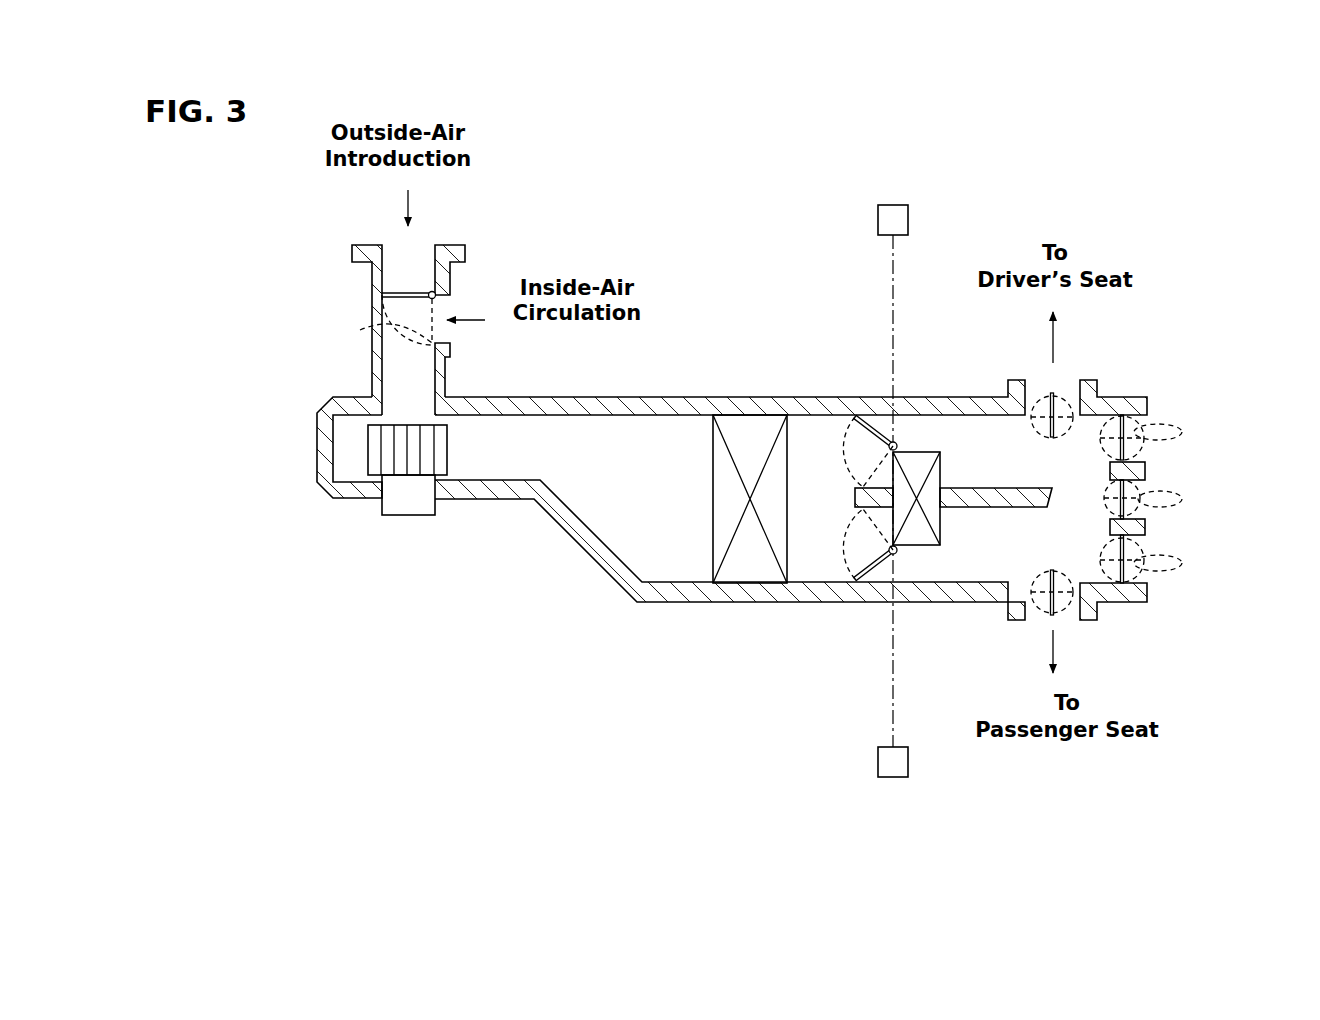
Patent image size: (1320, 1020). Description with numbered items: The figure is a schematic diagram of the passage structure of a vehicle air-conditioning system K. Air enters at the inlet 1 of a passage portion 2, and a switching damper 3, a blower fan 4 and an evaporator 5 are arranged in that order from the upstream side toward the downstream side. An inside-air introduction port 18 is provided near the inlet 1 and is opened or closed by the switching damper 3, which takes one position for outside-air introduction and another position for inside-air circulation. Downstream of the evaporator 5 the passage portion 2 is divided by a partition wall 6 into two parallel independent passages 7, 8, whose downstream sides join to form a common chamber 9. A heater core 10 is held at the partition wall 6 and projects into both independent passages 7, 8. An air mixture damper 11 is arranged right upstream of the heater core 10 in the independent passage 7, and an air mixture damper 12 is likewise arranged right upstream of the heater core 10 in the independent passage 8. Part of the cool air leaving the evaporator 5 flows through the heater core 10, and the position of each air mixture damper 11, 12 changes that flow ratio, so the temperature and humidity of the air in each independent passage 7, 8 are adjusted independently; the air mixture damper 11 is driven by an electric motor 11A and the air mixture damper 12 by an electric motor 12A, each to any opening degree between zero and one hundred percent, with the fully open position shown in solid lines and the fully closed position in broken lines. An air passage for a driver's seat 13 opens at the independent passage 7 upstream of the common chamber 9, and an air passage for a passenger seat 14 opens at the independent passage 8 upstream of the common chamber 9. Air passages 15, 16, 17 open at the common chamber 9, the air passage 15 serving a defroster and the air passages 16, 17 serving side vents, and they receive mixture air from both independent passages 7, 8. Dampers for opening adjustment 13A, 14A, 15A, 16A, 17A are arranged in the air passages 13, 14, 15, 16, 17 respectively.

The air-conditioning system K is at (704, 233).
The inlet 1 is at (397, 272).
The passage portion 2 is at (608, 518).
The switching damper 3 is at (402, 297).
The blower fan 4 is at (387, 458).
The evaporator 5 is at (748, 568).
The partition wall 6 is at (972, 502).
The independent passage 7 is at (964, 438).
The independent passage 8 is at (987, 558).
The common chamber 9 is at (1075, 492).
The heater core 10 is at (915, 462).
The air mixture damper 11 is at (885, 441).
The electric motor 11A is at (891, 212).
The air mixture damper 12 is at (876, 566).
The electric motor 12A is at (900, 760).
The air passage for a driver's seat 13 is at (1075, 385).
The damper for opening adjustment 13A is at (1050, 393).
The air passage for a passenger seat 14 is at (1073, 620).
The damper for opening adjustment 14A is at (1052, 617).
The air passage 15 is at (1143, 515).
The damper for opening adjustment 15A is at (1182, 500).
The air passage 16 is at (1142, 421).
The damper for opening adjustment 16A is at (1180, 430).
The air passage 17 is at (1143, 568).
The damper for opening adjustment 17A is at (1143, 547).
The inside-air introduction port 18 is at (443, 335).